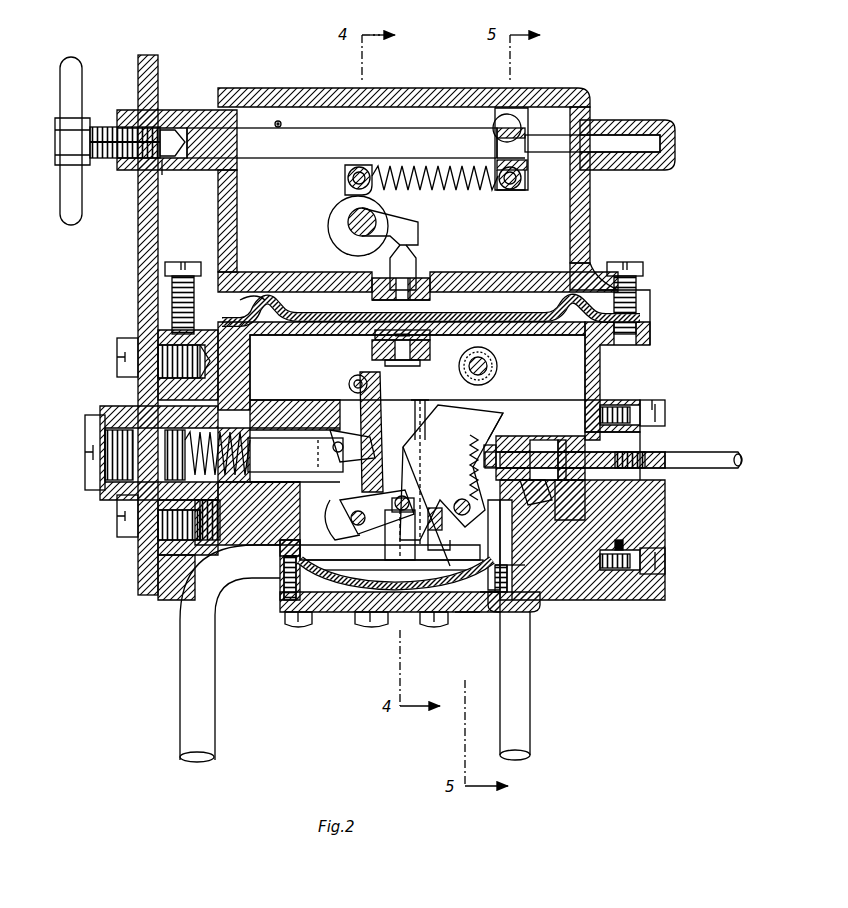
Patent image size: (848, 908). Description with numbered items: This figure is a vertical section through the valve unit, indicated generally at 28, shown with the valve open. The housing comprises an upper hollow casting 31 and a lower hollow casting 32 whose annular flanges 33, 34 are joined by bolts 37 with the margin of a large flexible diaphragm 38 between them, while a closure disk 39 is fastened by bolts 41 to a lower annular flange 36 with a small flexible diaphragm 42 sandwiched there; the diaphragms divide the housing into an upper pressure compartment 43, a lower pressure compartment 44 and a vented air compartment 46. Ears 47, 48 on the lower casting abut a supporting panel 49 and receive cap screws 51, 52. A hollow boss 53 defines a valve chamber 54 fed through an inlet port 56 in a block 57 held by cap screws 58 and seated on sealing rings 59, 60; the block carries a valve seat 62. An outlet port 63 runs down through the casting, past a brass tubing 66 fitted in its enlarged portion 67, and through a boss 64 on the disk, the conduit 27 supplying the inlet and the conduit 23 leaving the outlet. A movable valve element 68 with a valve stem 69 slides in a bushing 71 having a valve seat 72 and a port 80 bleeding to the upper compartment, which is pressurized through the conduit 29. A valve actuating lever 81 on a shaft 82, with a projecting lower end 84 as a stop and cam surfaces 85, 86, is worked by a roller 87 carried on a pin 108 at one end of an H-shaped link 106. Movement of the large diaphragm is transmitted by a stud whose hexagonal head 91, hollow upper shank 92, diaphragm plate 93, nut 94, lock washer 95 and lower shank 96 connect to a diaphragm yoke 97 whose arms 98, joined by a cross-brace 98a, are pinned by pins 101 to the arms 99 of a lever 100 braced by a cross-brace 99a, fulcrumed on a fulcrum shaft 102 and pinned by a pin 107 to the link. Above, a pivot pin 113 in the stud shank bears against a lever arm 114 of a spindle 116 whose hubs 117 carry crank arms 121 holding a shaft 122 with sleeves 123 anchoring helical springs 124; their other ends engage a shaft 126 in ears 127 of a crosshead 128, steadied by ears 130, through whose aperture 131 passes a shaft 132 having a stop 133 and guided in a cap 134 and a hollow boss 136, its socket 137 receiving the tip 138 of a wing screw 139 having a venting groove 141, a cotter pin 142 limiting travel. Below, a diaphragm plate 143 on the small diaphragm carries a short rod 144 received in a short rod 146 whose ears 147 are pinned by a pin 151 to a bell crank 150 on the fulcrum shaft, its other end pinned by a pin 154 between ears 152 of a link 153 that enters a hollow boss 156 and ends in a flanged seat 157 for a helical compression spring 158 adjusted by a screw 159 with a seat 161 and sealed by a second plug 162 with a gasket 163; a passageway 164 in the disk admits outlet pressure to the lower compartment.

The conduit 23 is at (531, 708).
The conduit 27 is at (705, 480).
The upper housing 28 is at (434, 175).
The conduit 29 is at (178, 712).
The upper hollow casting 31 is at (414, 90).
The lower hollow casting 32 is at (600, 380).
The annular flange 33 is at (652, 302).
The annular flange 34 is at (652, 330).
The annular flange 36 is at (280, 582).
The bolts 37 is at (183, 262).
The large flexible diaphragm 38 is at (258, 300).
The closure disk 39 is at (332, 614).
The bolts 41 is at (296, 628).
The small flexible diaphragm 42 is at (284, 590).
The upper pressure compartment 43 is at (264, 350).
The lower pressure compartment 44 is at (398, 614).
The air compartment 46 is at (264, 217).
The ear 47 is at (158, 372).
The ear 48 is at (158, 548).
The supporting panel 49 is at (138, 590).
The cap screw 51 is at (118, 342).
The cap screw 52 is at (117, 512).
The hollow boss 53 is at (576, 590).
The valve chamber 54 is at (518, 444).
The inlet port 56 is at (650, 480).
The block 57 is at (660, 446).
The cap screws 58 is at (668, 418).
The sealing ring 59 is at (667, 532).
The sealing ring 60 is at (572, 434).
The valve seat 62 is at (568, 522).
The outlet port 63 is at (532, 582).
The boss 64 is at (525, 632).
The brass tubing 66 is at (528, 598).
The enlarged portion 67 is at (530, 588).
The movable valve element 68 is at (546, 438).
The valve stem 69 is at (492, 444).
The bushing 71 is at (476, 456).
The valve seat 72 is at (530, 508).
The port 80 is at (502, 562).
The valve actuating lever 81 is at (451, 472).
The shaft 82 is at (460, 502).
The projecting lower end 84 is at (470, 547).
The cam surface 85 is at (500, 410).
The cam surface 86 is at (415, 420).
The lever actuating roller 87 is at (484, 360).
The hexagonal head 91 is at (430, 338).
The hollow upper shank 92 is at (432, 294).
The diaphragm plate 93 is at (484, 316).
The nut 94 is at (372, 284).
The lock washer 95 is at (372, 302).
The lower shank 96 is at (430, 350).
The diaphragm yoke 97 is at (372, 350).
The arms 98 is at (422, 363).
The cross-brace 98a is at (442, 518).
The arms 99 is at (392, 518).
The cross-brace 99a is at (282, 556).
The lever 100 is at (366, 406).
The pins 101 is at (416, 510).
The fulcrum shaft 102 is at (355, 523).
The H-shaped link 106 is at (349, 384).
The pin 107 is at (352, 390).
The pin 108 is at (490, 367).
The pivot pin 113 is at (418, 270).
The lever arm 114 is at (420, 233).
The spindle 116 is at (350, 232).
The hubs 117 is at (330, 229).
The crank arm 121 is at (348, 176).
The shaft 122 is at (349, 183).
The sleeves 123 is at (352, 190).
The helical springs 124 is at (478, 193).
The shaft 126 is at (517, 192).
The ears 127 is at (525, 178).
The crosshead 128 is at (528, 140).
The ears 130 is at (525, 117).
The aperture 131 is at (494, 140).
The shaft 132 is at (350, 140).
The stop 133 is at (503, 116).
The cap 134 is at (650, 122).
The hollow boss 136 is at (188, 114).
The socket 137 is at (178, 160).
The tip 138 is at (165, 178).
The wing screw 139 is at (110, 160).
The groove 141 is at (117, 128).
The cotter pin 142 is at (282, 124).
The diaphragm plate 143 is at (365, 572).
The short rod 144 is at (398, 572).
The short rod 146 is at (448, 575).
The ears 147 is at (420, 476).
The bell crank 150 is at (368, 504).
The pin 151 is at (396, 496).
The ears 152 is at (330, 440).
The link 153 is at (300, 436).
The pin 154 is at (352, 454).
The hollow boss 156 is at (262, 426).
The flanged seat 157 is at (255, 484).
The helical compression spring 158 is at (215, 500).
The screw 159 is at (166, 444).
The seat 161 is at (188, 454).
The second plug 162 is at (86, 458).
The gasket 163 is at (102, 412).
The passageway 164 is at (475, 614).